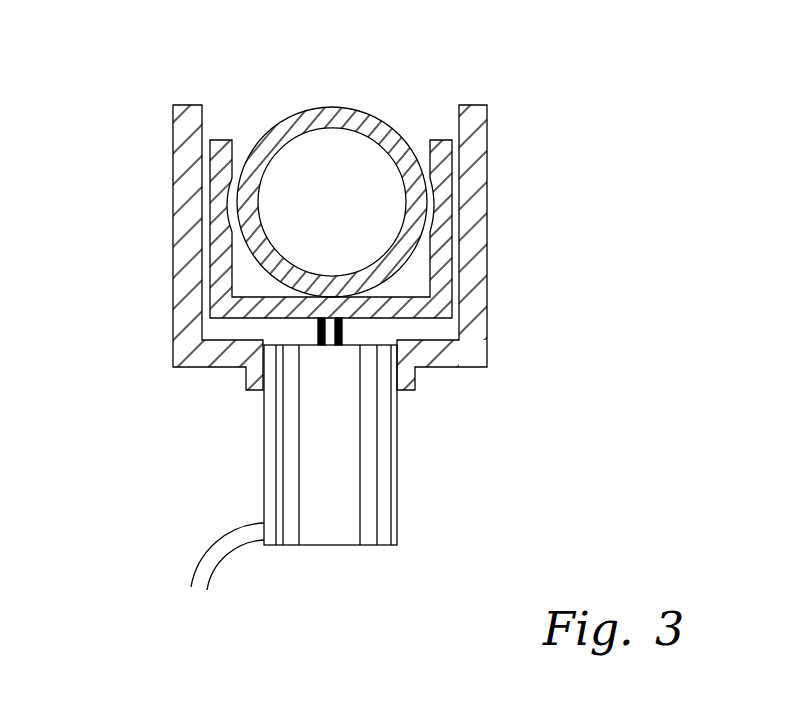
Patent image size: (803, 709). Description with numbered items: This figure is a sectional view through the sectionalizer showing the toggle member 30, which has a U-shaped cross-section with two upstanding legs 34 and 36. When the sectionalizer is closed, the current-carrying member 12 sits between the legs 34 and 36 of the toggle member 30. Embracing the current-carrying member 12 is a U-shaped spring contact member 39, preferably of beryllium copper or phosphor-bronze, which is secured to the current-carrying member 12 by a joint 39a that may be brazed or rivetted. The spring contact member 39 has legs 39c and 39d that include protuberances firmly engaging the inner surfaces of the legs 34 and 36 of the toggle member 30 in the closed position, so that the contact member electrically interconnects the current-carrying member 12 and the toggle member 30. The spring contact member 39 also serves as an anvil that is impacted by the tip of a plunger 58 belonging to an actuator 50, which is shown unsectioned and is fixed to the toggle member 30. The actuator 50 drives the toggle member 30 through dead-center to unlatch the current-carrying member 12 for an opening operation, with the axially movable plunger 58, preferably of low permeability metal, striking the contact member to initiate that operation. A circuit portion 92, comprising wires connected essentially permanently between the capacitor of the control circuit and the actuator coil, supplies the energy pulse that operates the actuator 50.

The current-carrying member 12 is at (370, 113).
The toggle member 30 is at (331, 274).
The leg of toggle member 34 is at (172, 228).
The leg of toggle member 36 is at (488, 190).
The U-shaped spring contact member 39 is at (302, 196).
The joint 39a is at (323, 303).
The leg of spring contact member 39c is at (232, 153).
The leg of spring contact member 39d is at (438, 140).
The actuator 50 is at (432, 467).
The plunger 58 is at (343, 330).
The circuit portion 92 is at (213, 546).